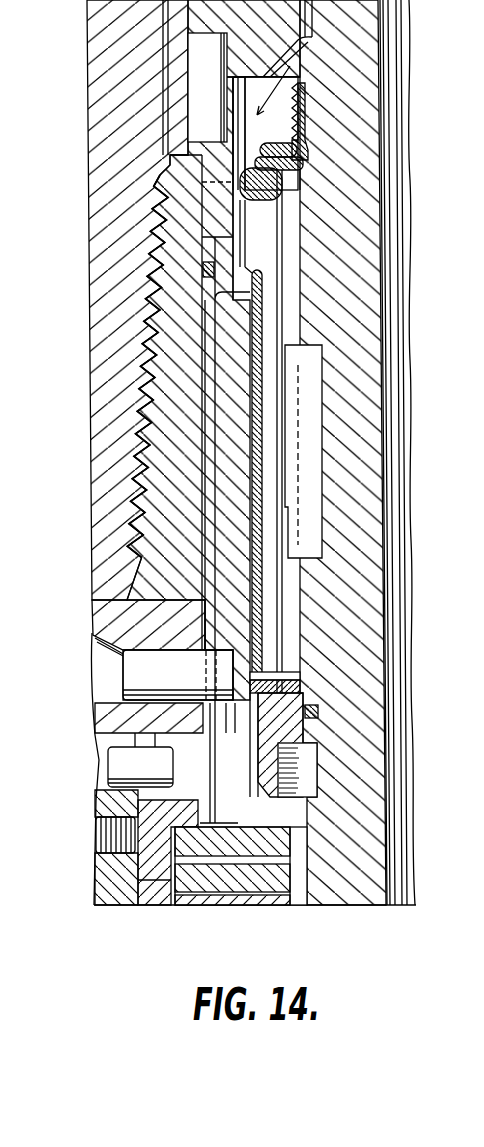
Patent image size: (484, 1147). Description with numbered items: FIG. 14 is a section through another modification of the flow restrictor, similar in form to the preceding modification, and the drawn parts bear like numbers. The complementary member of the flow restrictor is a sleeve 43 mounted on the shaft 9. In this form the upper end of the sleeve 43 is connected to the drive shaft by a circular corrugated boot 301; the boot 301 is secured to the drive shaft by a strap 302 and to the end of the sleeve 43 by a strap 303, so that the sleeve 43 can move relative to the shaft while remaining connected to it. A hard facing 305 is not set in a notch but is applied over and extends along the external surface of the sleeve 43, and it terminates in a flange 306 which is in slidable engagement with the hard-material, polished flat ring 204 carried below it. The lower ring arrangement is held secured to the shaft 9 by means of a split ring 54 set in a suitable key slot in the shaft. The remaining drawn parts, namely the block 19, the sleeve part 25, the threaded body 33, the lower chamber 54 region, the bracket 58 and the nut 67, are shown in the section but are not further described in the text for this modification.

The shaft 9 is at (375, 200).
The upper block 19 is at (198, 52).
The sleeve 25 is at (207, 352).
The threaded body 33 is at (173, 310).
The sleeve 43 is at (277, 284).
The split ring 54 is at (310, 770).
The bracket 58 is at (312, 512).
The nut 67 is at (247, 845).
The ring 204 is at (318, 697).
The circular corrugated boot 301 is at (300, 155).
The strap 302 is at (303, 105).
The strap 303 is at (158, 212).
The hard facing 305 is at (262, 455).
The flange 306 is at (275, 680).